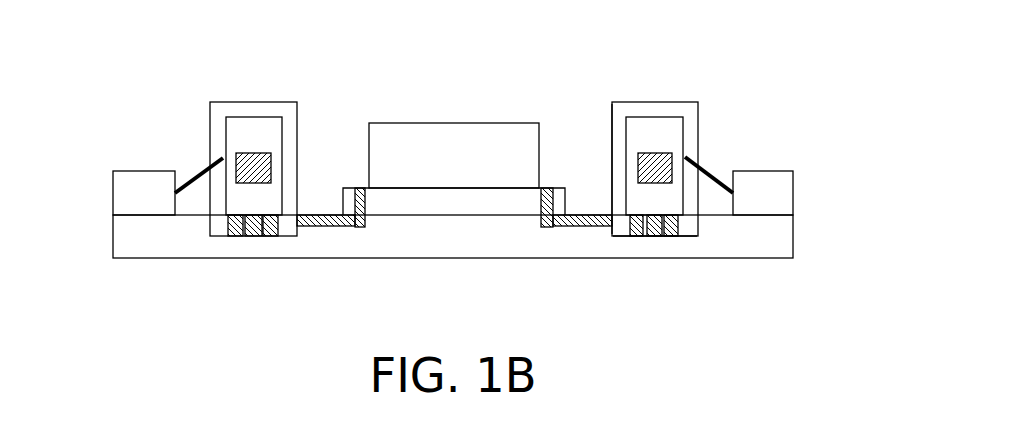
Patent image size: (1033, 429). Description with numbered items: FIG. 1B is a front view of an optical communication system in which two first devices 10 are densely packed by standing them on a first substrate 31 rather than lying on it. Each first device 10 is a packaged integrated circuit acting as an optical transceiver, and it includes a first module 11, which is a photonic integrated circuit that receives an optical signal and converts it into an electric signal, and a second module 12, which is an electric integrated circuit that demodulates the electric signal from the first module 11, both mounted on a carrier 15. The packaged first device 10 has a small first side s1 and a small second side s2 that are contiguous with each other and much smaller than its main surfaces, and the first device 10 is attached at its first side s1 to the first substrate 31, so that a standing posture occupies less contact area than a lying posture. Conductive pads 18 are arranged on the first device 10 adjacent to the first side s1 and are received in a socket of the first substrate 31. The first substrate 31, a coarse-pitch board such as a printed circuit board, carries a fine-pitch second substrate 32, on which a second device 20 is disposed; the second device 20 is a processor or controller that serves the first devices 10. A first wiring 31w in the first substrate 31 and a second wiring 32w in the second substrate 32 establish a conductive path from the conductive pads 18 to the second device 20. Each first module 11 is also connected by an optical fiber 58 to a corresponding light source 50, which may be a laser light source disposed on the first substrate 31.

The first device 10 is at (200, 95).
The first module 11 is at (638, 128).
The second module 12 is at (657, 150).
The carrier 15 is at (680, 108).
The conductive pads 18 is at (252, 236).
The second device 20 is at (467, 172).
The first substrate 31 is at (127, 236).
The first wiring 31w is at (317, 227).
The second substrate 32 is at (452, 200).
The second wiring 32w is at (367, 198).
The light source 50 is at (127, 192).
The optical fiber 58 is at (200, 167).
The first side s1 is at (690, 236).
The second side s2 is at (610, 125).